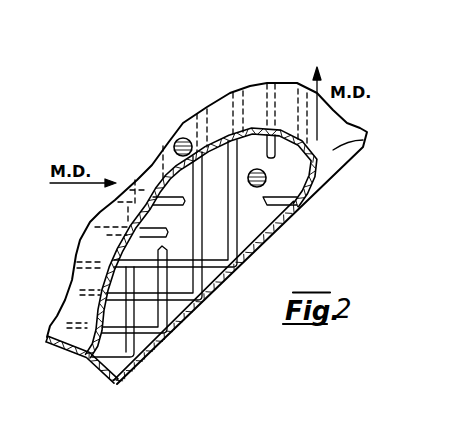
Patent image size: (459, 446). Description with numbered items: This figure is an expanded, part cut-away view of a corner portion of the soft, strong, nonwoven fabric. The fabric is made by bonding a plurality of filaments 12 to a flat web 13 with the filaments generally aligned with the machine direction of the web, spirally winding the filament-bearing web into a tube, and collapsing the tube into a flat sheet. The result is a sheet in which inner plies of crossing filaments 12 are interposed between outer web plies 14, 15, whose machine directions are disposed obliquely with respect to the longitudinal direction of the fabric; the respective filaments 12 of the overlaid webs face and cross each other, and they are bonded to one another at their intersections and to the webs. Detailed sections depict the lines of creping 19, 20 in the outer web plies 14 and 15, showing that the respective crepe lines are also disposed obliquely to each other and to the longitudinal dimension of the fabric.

The filaments 12 is at (184, 298).
The flat web 13 is at (367, 138).
The outer web ply 14 is at (87, 358).
The outer web ply 15 is at (105, 373).
The lines of creping 19 is at (174, 140).
The lines of creping 20 is at (251, 187).